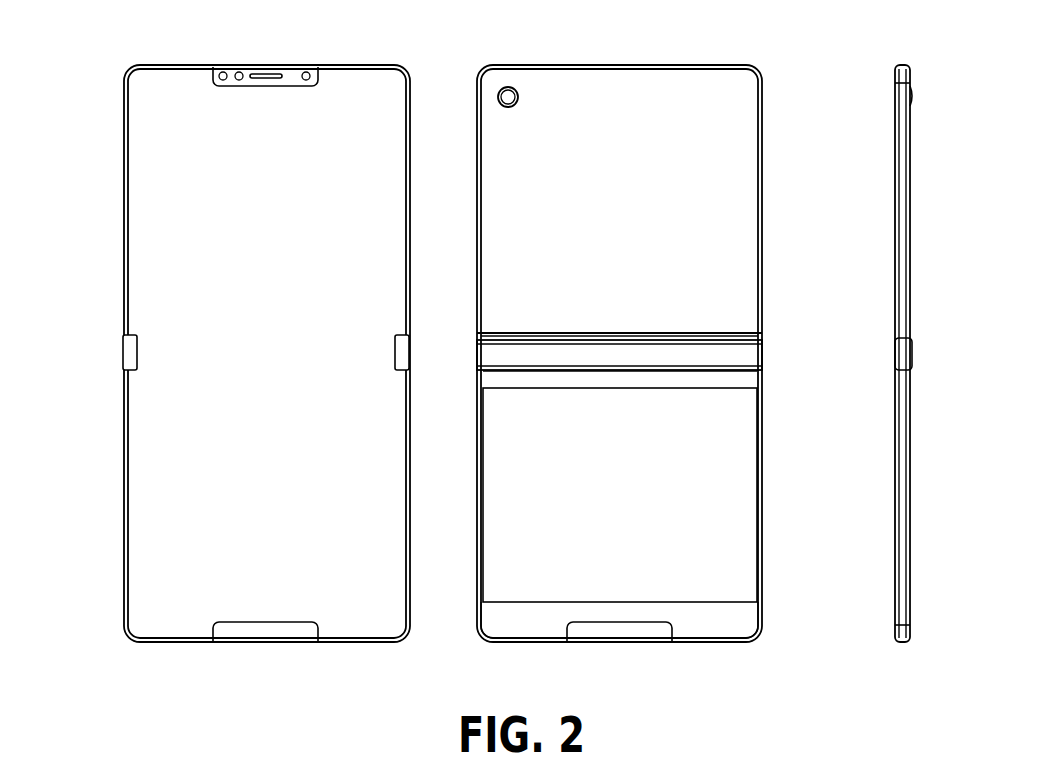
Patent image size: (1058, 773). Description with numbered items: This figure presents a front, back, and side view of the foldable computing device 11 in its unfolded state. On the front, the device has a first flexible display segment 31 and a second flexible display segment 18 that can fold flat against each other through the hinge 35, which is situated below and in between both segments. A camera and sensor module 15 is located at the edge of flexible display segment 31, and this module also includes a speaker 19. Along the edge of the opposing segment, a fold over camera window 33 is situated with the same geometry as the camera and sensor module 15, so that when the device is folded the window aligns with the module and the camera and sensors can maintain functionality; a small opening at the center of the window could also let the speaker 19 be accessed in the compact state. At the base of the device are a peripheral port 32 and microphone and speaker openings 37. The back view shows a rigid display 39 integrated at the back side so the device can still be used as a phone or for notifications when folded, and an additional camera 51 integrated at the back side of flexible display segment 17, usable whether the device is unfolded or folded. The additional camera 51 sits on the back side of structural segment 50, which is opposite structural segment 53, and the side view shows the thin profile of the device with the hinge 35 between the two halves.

The foldable computing device 11 is at (118, 39).
The camera and sensor module 15 is at (223, 68).
The flexible display segment 17 is at (132, 149).
The second flexible display segment 18 is at (132, 545).
The speaker 19 is at (265, 72).
The first flexible display segment 31 is at (355, 76).
The peripheral port 32 is at (173, 640).
The fold over camera window 33 is at (265, 640).
The hinge 35 is at (124, 353).
The microphone and speaker openings 37 is at (354, 640).
The rigid display 39 is at (745, 428).
The structural segment 50 is at (750, 138).
The additional camera 51 is at (508, 87).
The structural segment 53 is at (748, 613).